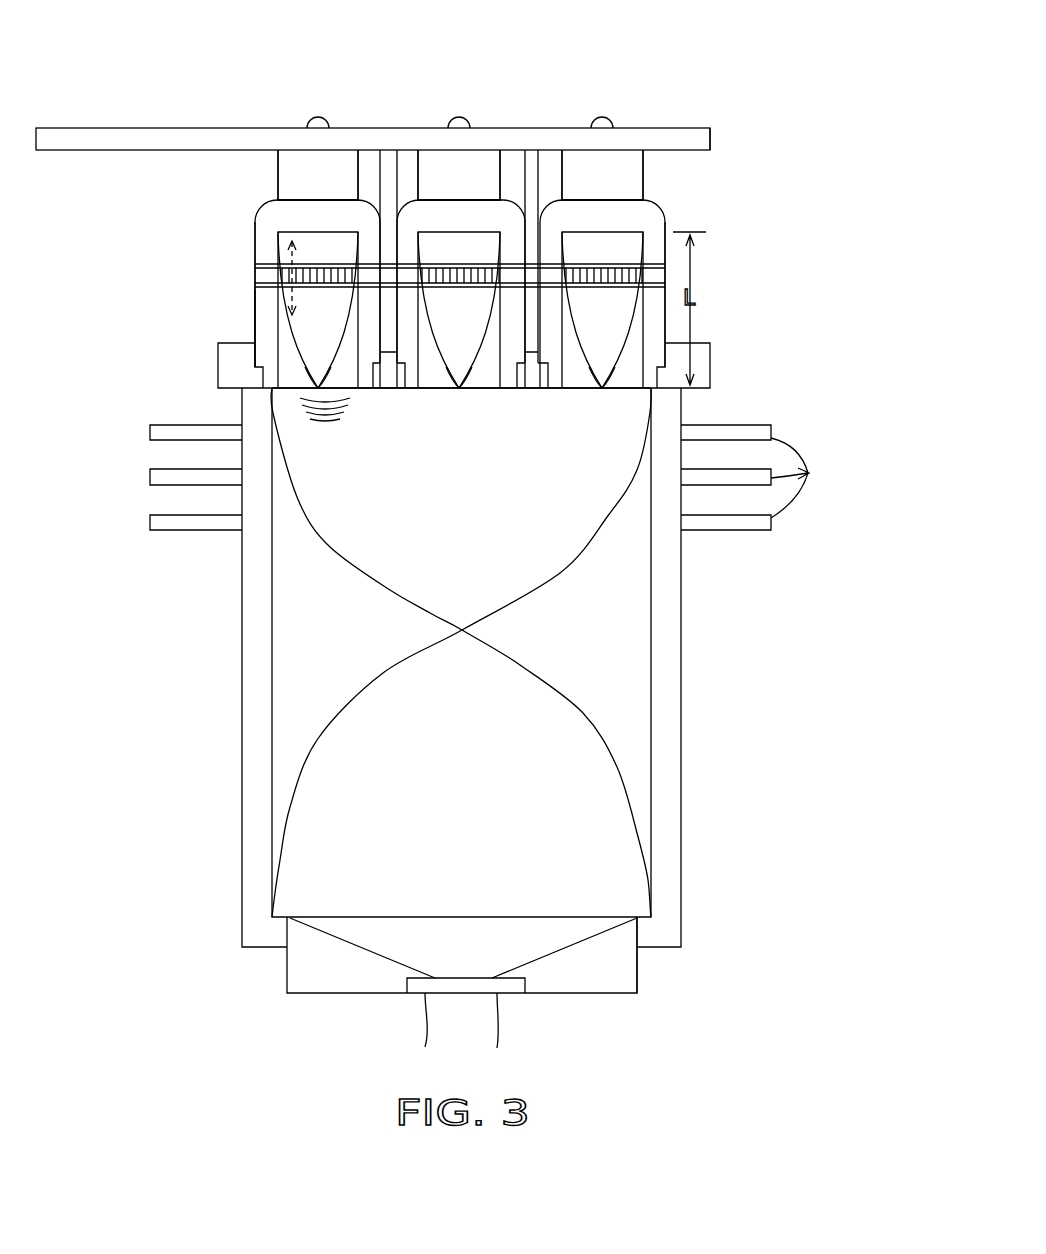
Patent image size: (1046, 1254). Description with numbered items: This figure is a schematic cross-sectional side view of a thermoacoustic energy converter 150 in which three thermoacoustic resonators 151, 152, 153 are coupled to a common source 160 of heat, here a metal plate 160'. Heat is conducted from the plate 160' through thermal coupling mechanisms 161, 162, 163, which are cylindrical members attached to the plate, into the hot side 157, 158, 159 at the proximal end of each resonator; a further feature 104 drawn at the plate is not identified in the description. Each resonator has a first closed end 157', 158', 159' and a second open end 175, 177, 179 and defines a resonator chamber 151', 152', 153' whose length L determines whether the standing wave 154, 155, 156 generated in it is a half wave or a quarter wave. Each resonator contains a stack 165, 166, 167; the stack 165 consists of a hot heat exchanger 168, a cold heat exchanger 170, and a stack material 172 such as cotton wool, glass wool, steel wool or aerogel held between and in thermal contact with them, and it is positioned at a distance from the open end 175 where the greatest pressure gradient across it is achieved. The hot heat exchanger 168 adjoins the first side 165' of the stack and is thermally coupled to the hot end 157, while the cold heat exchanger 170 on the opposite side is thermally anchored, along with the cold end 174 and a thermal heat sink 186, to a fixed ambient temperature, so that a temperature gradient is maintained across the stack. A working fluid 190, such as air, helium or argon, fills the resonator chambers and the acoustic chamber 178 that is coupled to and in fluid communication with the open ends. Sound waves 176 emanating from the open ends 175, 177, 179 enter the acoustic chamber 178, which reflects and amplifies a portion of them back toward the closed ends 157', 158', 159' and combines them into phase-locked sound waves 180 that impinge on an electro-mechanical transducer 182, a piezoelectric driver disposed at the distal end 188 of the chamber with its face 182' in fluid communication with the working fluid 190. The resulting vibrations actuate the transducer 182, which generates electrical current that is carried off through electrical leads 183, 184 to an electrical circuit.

The gas inlet port 104 is at (313, 117).
The thermoacoustic energy converter 150 is at (748, 300).
The thermoacoustic resonator 151 is at (304, 231).
The resonator chamber 151' is at (318, 310).
The thermoacoustic resonator 152 is at (461, 228).
The resonator chamber 152' is at (459, 310).
The thermoacoustic resonator 153 is at (602, 226).
The resonator chamber 153' is at (602, 310).
The standing wave 154 is at (316, 423).
The standing wave 155 is at (433, 390).
The standing wave 156 is at (578, 394).
The hot side 157 is at (338, 141).
The first closed end 157' is at (319, 276).
The hot side 158 is at (490, 142).
The first closed end 158' is at (466, 278).
The hot side 159 is at (637, 142).
The first closed end 159' is at (610, 278).
The heat source 160 is at (373, 104).
The metal plate 160' is at (763, 102).
The thermal coupling mechanism 161 is at (297, 163).
The thermal coupling mechanism 162 is at (470, 163).
The thermal coupling mechanism 163 is at (613, 158).
The stack 165 is at (415, 250).
The first side of stack 165' is at (390, 269).
The stack 166 is at (502, 265).
The stack 167 is at (657, 262).
The hot heat exchanger 168 is at (255, 262).
The cold heat exchanger 170 is at (255, 287).
The stack material 172 is at (308, 240).
The cold end 174 is at (267, 352).
The second open end 175 is at (352, 392).
The sound waves 176 is at (340, 418).
The second open end 177 is at (478, 390).
The acoustic chamber 178 is at (480, 750).
The second open end 179 is at (622, 395).
The phase-locked sound waves 180 is at (528, 673).
The electro-mechanical transducer 182 is at (462, 999).
The transducer face 182' is at (463, 911).
The electrical lead 183 is at (427, 1037).
The electrical lead 184 is at (500, 1027).
The thermal heat sink 186 is at (511, 477).
The distal end of chamber 188 is at (635, 918).
The working fluid 190 is at (470, 556).